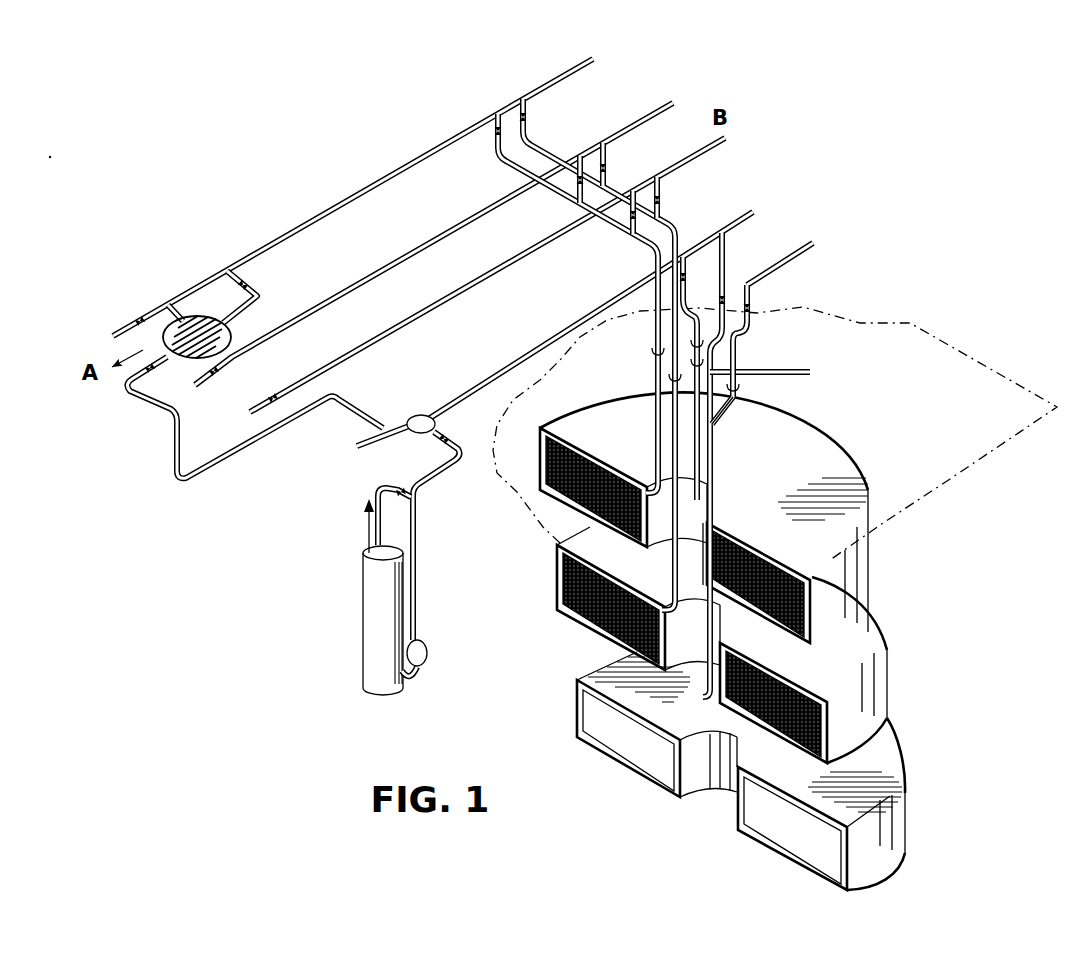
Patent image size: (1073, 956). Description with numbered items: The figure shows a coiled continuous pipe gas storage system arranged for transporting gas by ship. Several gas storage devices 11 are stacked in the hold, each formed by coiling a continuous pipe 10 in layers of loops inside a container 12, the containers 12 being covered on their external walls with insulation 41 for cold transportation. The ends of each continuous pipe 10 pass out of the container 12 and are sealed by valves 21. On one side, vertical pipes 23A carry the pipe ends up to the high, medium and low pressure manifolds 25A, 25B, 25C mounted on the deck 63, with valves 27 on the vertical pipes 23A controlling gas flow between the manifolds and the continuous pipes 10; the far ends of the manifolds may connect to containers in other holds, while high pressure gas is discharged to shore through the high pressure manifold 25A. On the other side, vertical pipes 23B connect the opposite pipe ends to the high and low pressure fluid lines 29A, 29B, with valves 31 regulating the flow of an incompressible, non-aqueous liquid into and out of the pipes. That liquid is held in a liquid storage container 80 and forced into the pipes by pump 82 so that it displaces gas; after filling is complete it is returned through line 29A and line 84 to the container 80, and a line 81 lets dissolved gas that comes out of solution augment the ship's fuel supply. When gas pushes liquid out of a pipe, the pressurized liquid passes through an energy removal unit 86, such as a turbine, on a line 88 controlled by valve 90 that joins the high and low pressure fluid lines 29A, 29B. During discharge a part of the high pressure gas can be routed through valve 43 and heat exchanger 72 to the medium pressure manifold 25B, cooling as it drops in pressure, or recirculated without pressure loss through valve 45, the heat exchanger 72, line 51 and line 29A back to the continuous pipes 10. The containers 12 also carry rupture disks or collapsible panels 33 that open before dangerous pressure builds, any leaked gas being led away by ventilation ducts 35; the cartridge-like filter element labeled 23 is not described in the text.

The continuous pipe 10 is at (537, 468).
The gas storage device 11 is at (885, 540).
The container 12 is at (815, 425).
The valves 21 is at (667, 372).
The filter cartridge 23 is at (673, 577).
The vertical pipes 23A is at (660, 415).
The vertical pipes 23B is at (713, 483).
The high pressure manifold 25A is at (372, 188).
The medium pressure manifold 25B is at (431, 246).
The low pressure manifold 25C is at (438, 305).
The valves 27 is at (524, 128).
The high pressure fluid line 29A is at (756, 212).
The low pressure fluid line 29B is at (812, 244).
The valves 31 is at (688, 276).
The rupture disks or collapsible panels 33 is at (703, 505).
The ventilation ducts 35 is at (711, 423).
The insulation 41 is at (541, 496).
The valve 43 is at (173, 320).
The valve 45 is at (248, 288).
The line 51 is at (185, 484).
The deck 63 is at (862, 320).
The heat exchanger 72 is at (233, 330).
The liquid storage container 80 is at (360, 620).
The line 81 is at (365, 523).
The pump 82 is at (428, 660).
The line 84 is at (377, 490).
The energy removal unit 86 is at (437, 420).
The line 88 is at (433, 437).
The valve 90 is at (447, 447).